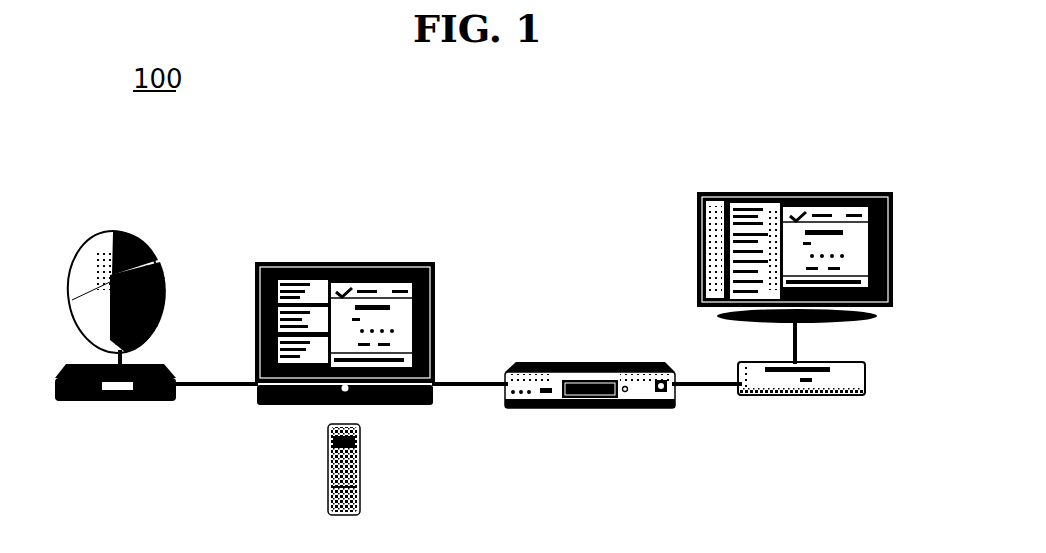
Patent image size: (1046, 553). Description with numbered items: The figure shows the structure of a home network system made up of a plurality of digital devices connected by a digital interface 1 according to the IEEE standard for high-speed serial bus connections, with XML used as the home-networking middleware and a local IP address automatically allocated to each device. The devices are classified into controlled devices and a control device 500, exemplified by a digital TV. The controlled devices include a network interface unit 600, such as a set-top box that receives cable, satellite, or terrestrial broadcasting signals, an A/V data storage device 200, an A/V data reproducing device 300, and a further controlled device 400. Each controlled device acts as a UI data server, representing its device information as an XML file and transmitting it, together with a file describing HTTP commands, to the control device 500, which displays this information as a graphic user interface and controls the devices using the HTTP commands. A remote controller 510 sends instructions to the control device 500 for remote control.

The digital interface 1 is at (205, 388).
The A/V data storage device 200 is at (587, 362).
The A/V data reproducing device 300 is at (865, 378).
The controlled device 400 is at (737, 192).
The control device 500 is at (363, 262).
The remote controller 510 is at (360, 472).
The network interface unit 600 is at (147, 241).